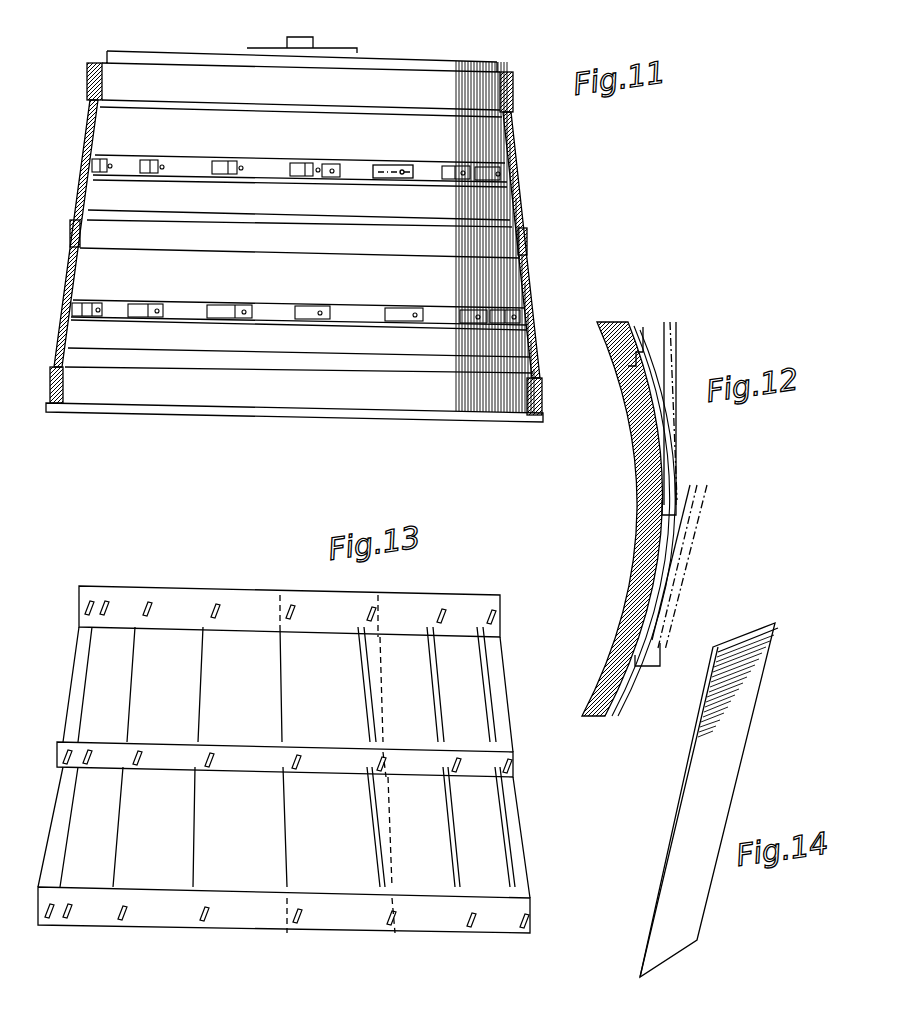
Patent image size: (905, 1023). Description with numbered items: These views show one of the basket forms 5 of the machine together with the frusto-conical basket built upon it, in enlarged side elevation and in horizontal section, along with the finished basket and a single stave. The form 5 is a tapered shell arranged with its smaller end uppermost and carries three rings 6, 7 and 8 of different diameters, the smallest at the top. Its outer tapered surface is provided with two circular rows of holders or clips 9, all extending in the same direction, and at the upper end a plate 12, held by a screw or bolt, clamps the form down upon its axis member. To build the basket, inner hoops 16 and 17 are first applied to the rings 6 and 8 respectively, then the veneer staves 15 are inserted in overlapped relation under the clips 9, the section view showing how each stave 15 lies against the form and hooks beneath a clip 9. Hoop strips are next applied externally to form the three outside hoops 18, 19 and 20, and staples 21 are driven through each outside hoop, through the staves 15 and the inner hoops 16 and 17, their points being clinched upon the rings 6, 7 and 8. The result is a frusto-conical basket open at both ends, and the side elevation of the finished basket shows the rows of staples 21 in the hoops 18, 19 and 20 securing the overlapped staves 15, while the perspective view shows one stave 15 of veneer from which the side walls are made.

In FIG. 11, the basket form 5 is at (407, 345).
In FIG. 12, the basket form 5 is at (640, 478).
In FIG. 11, the ring 6 is at (447, 80).
In FIG. 11, the ring 7 is at (490, 235).
In FIG. 11, the ring 8 is at (438, 400).
In FIG. 11, the holders or clips 9 is at (108, 158).
In FIG. 12, the holders or clips 9 is at (662, 655).
In FIG. 11, the plate 12 is at (188, 163).
In FIG. 11, the staves 15 is at (90, 126).
In FIG. 12, the staves 15 is at (678, 350).
In FIG. 14, the staves 15 is at (700, 768).
In FIG. 13, the staves 15 is at (75, 700).
In FIG. 11, the inner hoop 16 is at (100, 75).
In FIG. 11, the inner hoop 17 is at (68, 405).
In FIG. 11, the outside hoop 18 is at (87, 88).
In FIG. 13, the outside hoop 18 is at (500, 614).
In FIG. 11, the outside hoop 19 is at (70, 235).
In FIG. 13, the outside hoop 19 is at (513, 764).
In FIG. 11, the outside hoop 20 is at (50, 390).
In FIG. 13, the outside hoop 20 is at (530, 913).
In FIG. 13, the staples 21 is at (205, 612).